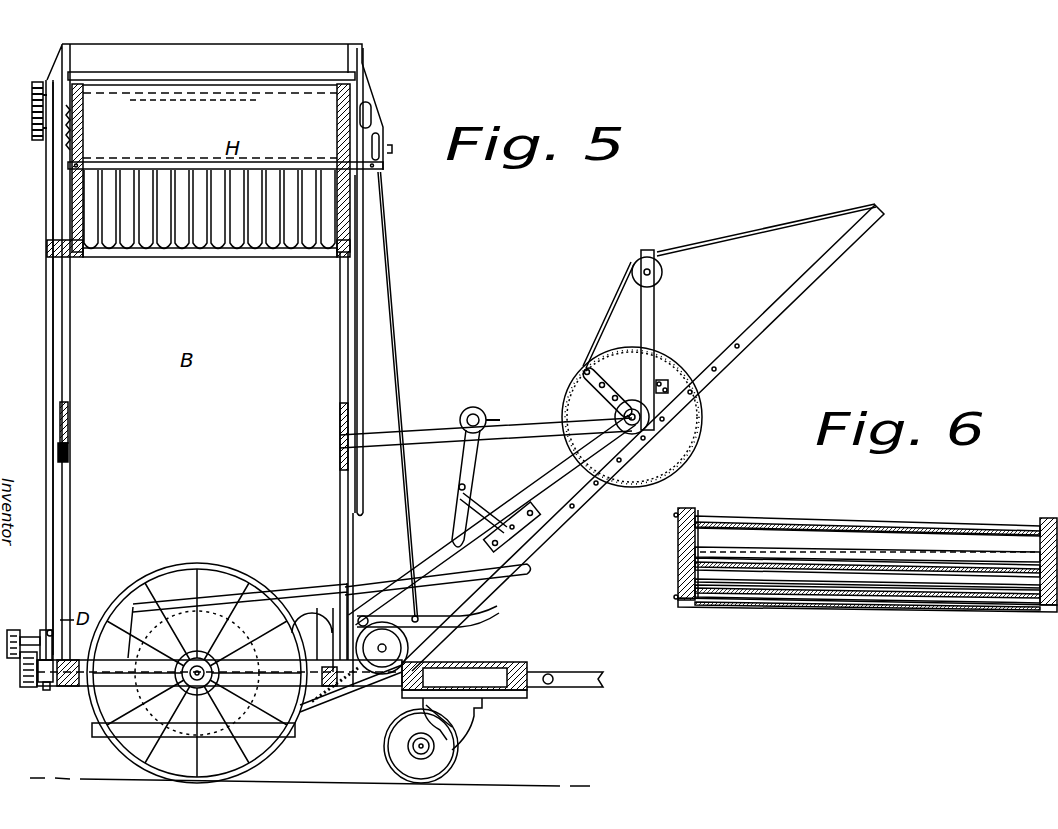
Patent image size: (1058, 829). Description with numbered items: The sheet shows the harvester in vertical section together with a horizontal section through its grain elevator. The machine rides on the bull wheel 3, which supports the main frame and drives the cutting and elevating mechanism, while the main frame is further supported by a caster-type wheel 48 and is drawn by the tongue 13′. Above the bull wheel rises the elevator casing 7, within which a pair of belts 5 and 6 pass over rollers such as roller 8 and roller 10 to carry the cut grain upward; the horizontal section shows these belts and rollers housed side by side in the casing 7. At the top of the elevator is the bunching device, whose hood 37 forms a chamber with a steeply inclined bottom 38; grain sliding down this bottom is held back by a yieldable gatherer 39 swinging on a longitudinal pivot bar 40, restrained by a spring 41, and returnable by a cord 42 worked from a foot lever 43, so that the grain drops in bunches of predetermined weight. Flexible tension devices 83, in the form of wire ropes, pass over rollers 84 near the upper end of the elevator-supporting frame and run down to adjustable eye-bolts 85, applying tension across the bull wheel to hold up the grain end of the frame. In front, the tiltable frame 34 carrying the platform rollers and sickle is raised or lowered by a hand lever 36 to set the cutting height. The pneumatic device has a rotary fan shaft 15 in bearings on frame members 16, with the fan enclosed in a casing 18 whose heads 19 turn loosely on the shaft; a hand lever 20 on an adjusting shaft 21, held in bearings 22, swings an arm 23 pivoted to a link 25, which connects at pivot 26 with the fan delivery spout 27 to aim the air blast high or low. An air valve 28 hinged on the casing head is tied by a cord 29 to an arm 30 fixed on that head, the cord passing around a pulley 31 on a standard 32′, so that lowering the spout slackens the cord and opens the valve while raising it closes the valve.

In FIG. 5, the bull wheel 3 is at (163, 572).
In FIG. 6, the elevator belt 5 is at (773, 596).
In FIG. 6, the elevator belt 6 is at (893, 530).
In FIG. 6, the casing 7 is at (678, 565).
In FIG. 6, the roller 8 is at (838, 583).
In FIG. 6, the roller 10 is at (795, 528).
In FIG. 5, the tongue 13' is at (507, 669).
In FIG. 5, the rotary fan shaft 15 is at (646, 418).
In FIG. 5, the frame members 16 is at (430, 440).
In FIG. 5, the fan casing 18 is at (693, 452).
In FIG. 5, the casing head 19 is at (646, 463).
In FIG. 5, the hand lever 20 is at (453, 531).
In FIG. 5, the adjusting shaft 21 is at (487, 418).
In FIG. 5, the bearings 22 is at (461, 418).
In FIG. 5, the arm 23 is at (474, 473).
In FIG. 5, the link 25 is at (478, 501).
In FIG. 5, the pivot 26 is at (537, 531).
In FIG. 5, the fan delivery spout 27 is at (455, 600).
In FIG. 5, the air valve 28 is at (587, 402).
In FIG. 5, the cord 29 is at (755, 240).
In FIG. 5, the arm 30 is at (764, 323).
In FIG. 5, the pulley 31 is at (663, 268).
In FIG. 5, the standard 32' is at (670, 340).
In FIG. 5, the frame 34 is at (306, 706).
In FIG. 5, the hand lever 36 is at (532, 570).
In FIG. 5, the hood 37 is at (211, 64).
In FIG. 5, the bottom 38 is at (272, 250).
In FIG. 5, the yieldable gatherer 39 is at (160, 252).
In FIG. 5, the longitudinal pivot bar 40 is at (128, 89).
In FIG. 5, the spring 41 is at (66, 149).
In FIG. 5, the cord 42 is at (396, 392).
In FIG. 5, the foot lever 43 is at (493, 615).
In FIG. 5, the wheel 48 is at (462, 749).
In FIG. 5, the flexible tension devices 83 is at (54, 531).
In FIG. 5, the rollers 84 is at (50, 80).
In FIG. 5, the eye-bolts 85 is at (44, 630).